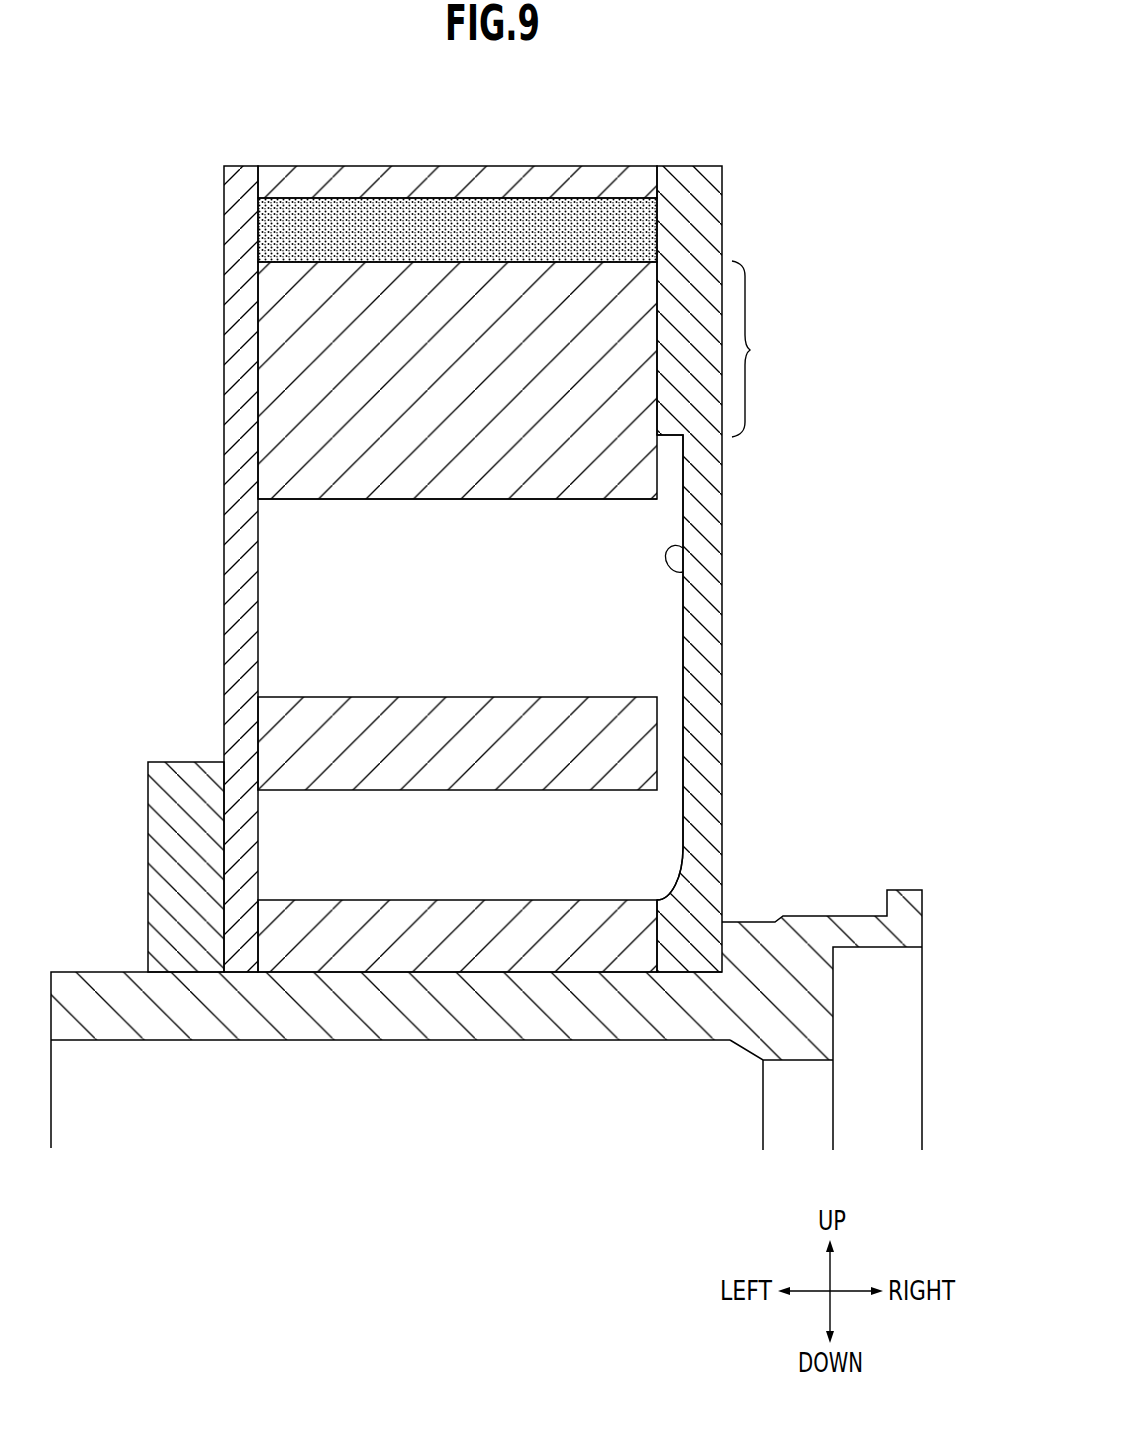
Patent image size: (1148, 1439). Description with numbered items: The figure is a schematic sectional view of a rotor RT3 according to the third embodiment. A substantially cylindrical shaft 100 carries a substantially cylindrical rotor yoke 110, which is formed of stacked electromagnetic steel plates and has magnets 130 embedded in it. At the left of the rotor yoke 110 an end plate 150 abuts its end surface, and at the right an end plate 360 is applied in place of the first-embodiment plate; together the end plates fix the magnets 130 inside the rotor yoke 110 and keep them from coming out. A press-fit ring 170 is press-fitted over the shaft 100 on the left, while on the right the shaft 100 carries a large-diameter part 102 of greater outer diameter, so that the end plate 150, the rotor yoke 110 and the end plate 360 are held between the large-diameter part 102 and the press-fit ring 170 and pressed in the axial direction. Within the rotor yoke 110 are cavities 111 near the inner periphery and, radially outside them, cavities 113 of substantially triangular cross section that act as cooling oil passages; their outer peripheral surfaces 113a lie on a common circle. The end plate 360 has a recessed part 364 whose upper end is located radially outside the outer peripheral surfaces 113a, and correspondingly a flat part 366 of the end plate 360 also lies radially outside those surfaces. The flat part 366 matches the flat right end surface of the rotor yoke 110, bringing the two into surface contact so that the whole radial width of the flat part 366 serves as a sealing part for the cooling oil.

The rotor RT3 is at (737, 64).
The shaft 100 is at (106, 985).
The large-diameter part 102 is at (808, 935).
The rotor yoke 110 is at (490, 284).
The cavity 111 is at (613, 862).
The cavity 113 is at (610, 623).
The outer peripheral surface 113a is at (342, 500).
The magnet 130 is at (338, 232).
The end plate 150 is at (241, 178).
The press-fit ring 170 is at (160, 852).
The end plate 360 is at (700, 232).
The recessed part 364 is at (683, 548).
The flat part 366 is at (770, 349).